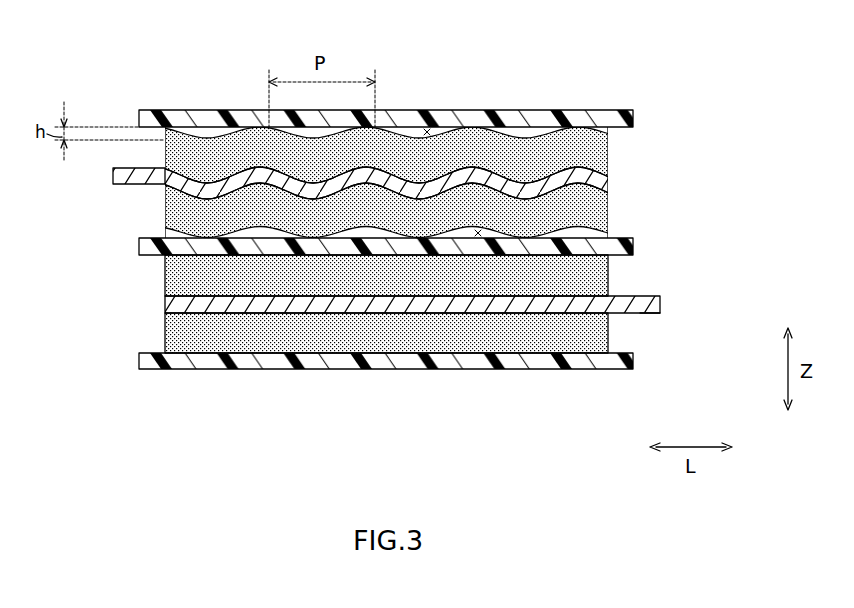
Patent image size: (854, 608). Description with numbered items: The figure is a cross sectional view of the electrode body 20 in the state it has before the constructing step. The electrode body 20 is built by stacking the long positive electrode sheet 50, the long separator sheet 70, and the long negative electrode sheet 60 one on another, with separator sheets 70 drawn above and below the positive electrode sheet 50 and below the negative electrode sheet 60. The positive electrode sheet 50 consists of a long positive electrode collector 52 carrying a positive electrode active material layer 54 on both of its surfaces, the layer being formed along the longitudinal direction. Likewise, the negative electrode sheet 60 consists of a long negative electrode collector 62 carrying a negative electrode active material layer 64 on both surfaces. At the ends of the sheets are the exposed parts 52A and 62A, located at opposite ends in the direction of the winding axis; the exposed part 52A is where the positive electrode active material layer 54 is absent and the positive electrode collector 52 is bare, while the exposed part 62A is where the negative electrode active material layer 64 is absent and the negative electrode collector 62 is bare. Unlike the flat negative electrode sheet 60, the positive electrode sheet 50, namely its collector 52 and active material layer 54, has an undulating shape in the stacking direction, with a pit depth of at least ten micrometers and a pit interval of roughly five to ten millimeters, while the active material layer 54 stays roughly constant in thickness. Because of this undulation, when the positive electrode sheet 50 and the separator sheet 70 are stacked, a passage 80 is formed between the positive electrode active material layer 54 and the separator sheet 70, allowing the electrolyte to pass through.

The electrode body 20 is at (600, 72).
The positive electrode sheet 50 is at (612, 187).
The positive electrode collector 52 is at (392, 183).
The exposed part 52A is at (133, 186).
The positive electrode active material layer 54 is at (163, 152).
The negative electrode sheet 60 is at (160, 286).
The negative electrode collector 62 is at (661, 303).
The exposed part 62A is at (646, 313).
The negative electrode active material layer 64 is at (608, 271).
The separator sheet 70 is at (635, 115).
The passage 80 is at (430, 126).